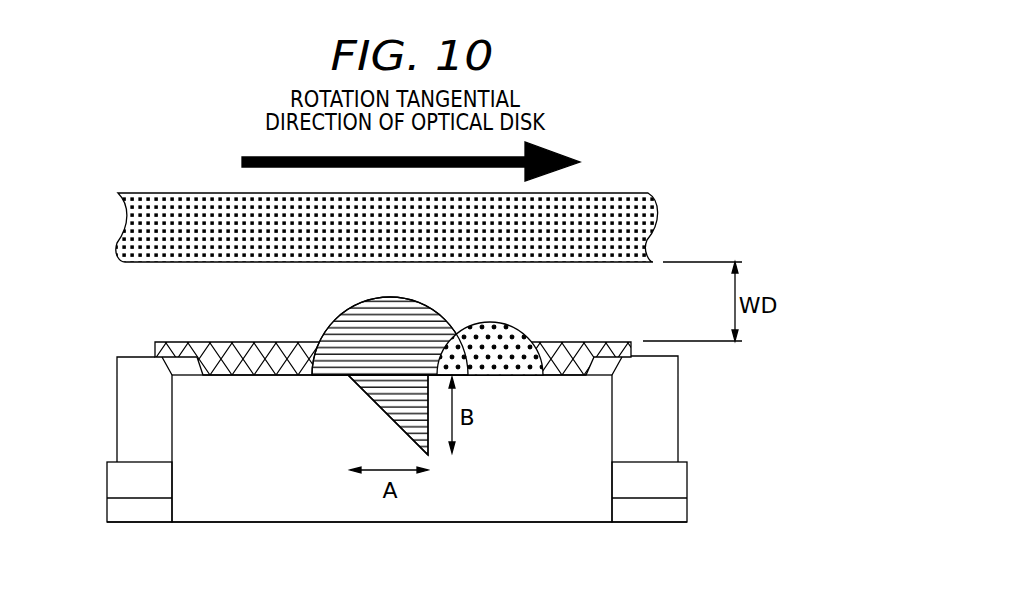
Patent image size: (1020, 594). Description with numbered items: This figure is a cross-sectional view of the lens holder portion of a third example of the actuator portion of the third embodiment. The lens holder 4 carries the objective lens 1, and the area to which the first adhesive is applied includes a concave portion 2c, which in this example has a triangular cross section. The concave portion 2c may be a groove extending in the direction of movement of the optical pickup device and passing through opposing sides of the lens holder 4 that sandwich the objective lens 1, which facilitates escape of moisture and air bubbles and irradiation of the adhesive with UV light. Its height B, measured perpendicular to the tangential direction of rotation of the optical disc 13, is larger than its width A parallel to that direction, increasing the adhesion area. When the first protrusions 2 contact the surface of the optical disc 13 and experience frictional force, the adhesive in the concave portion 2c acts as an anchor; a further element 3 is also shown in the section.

The objective lens 1 is at (200, 345).
The first protrusions 2 is at (314, 434).
The concave portion 2c is at (380, 407).
The solid immersion lens 3 is at (495, 338).
The lens holder 4 is at (653, 412).
The optical disc 13 is at (635, 223).